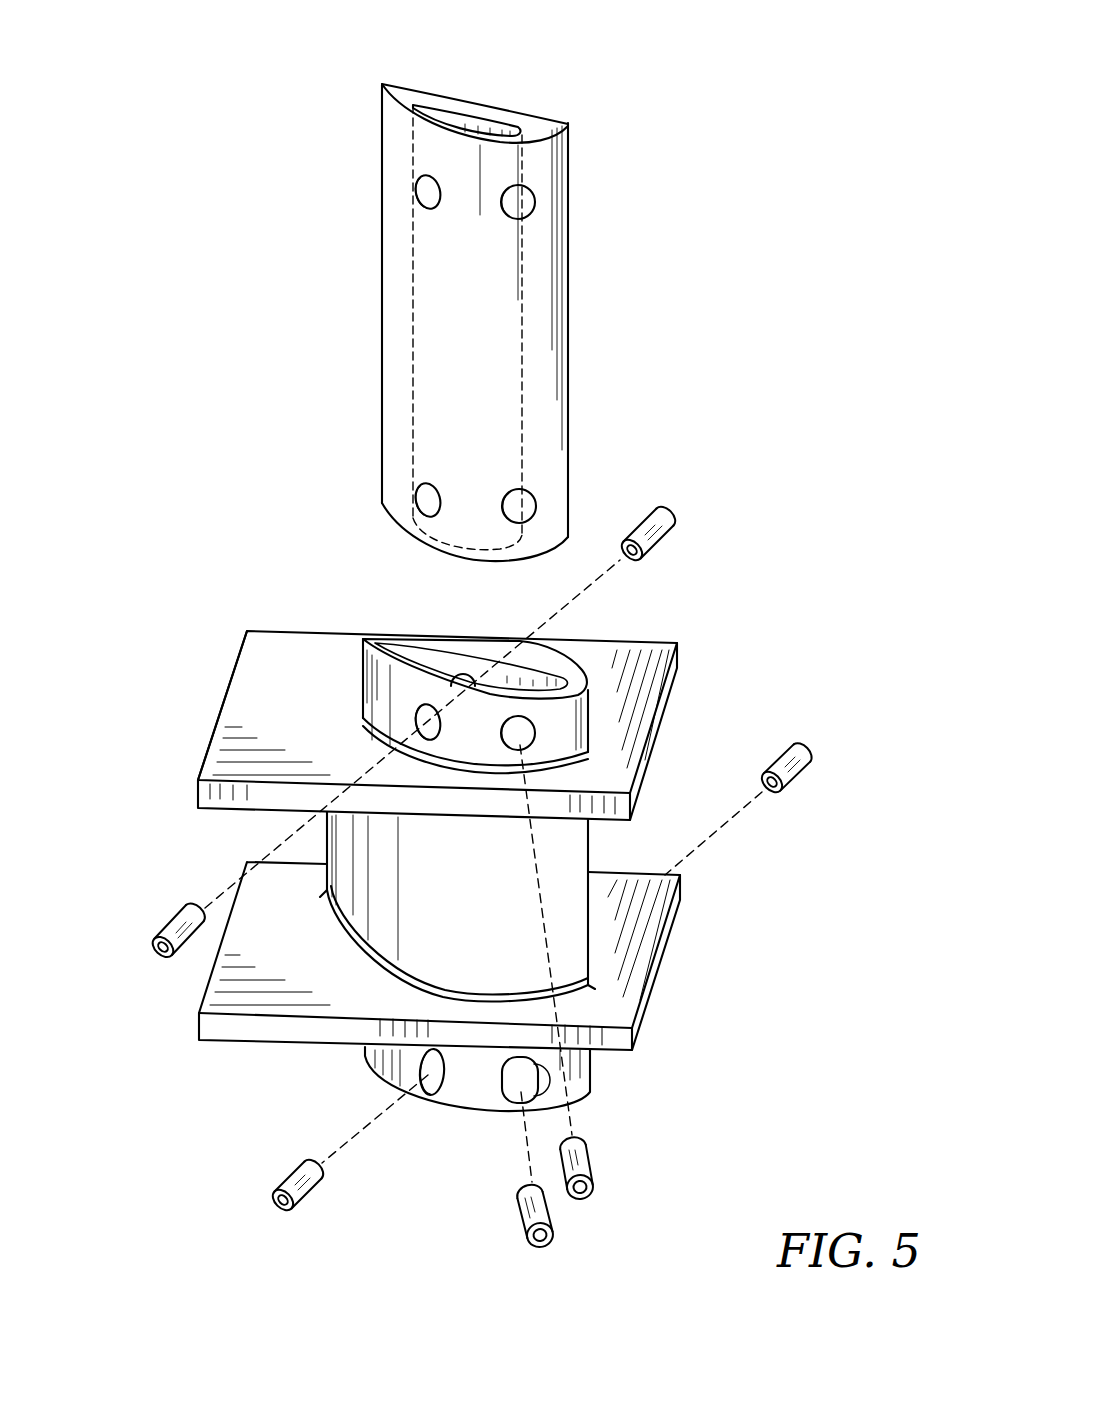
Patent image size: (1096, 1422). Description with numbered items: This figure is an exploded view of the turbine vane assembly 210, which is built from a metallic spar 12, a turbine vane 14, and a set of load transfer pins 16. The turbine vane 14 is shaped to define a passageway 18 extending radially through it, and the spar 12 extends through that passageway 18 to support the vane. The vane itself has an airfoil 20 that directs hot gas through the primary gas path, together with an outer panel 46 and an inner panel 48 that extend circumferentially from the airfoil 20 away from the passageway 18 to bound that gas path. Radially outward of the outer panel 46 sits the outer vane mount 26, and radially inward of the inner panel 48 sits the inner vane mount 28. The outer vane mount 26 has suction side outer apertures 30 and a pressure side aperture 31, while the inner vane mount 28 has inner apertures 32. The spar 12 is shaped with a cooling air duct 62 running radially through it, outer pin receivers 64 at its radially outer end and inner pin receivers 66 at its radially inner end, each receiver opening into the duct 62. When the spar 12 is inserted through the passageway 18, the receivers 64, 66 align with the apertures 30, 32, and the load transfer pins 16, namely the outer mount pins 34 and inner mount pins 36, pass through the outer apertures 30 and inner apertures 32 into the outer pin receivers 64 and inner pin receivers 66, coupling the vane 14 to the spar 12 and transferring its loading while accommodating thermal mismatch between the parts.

The airfoil assembly 210 is at (130, 87).
The spar 12 is at (302, 152).
The cooling air duct 62 is at (500, 132).
The outer pin receivers 64 is at (415, 190).
The inner pin receivers 66 is at (416, 500).
The load transfer pins 16 is at (695, 500).
The outer mount pins 34 is at (665, 543).
The inner mount pins 36 is at (803, 752).
The turbine vane 14 is at (756, 671).
The outer vane mount 26 is at (320, 683).
The outer panel 46 is at (645, 638).
The passageway 18 is at (438, 672).
The pressure side aperture 31 is at (463, 660).
The outer apertures 30 is at (543, 731).
The airfoil 20 is at (595, 855).
The inner panel 48 is at (672, 946).
The inner vane mount 28 is at (310, 1060).
The inner apertures 32 is at (545, 1086).